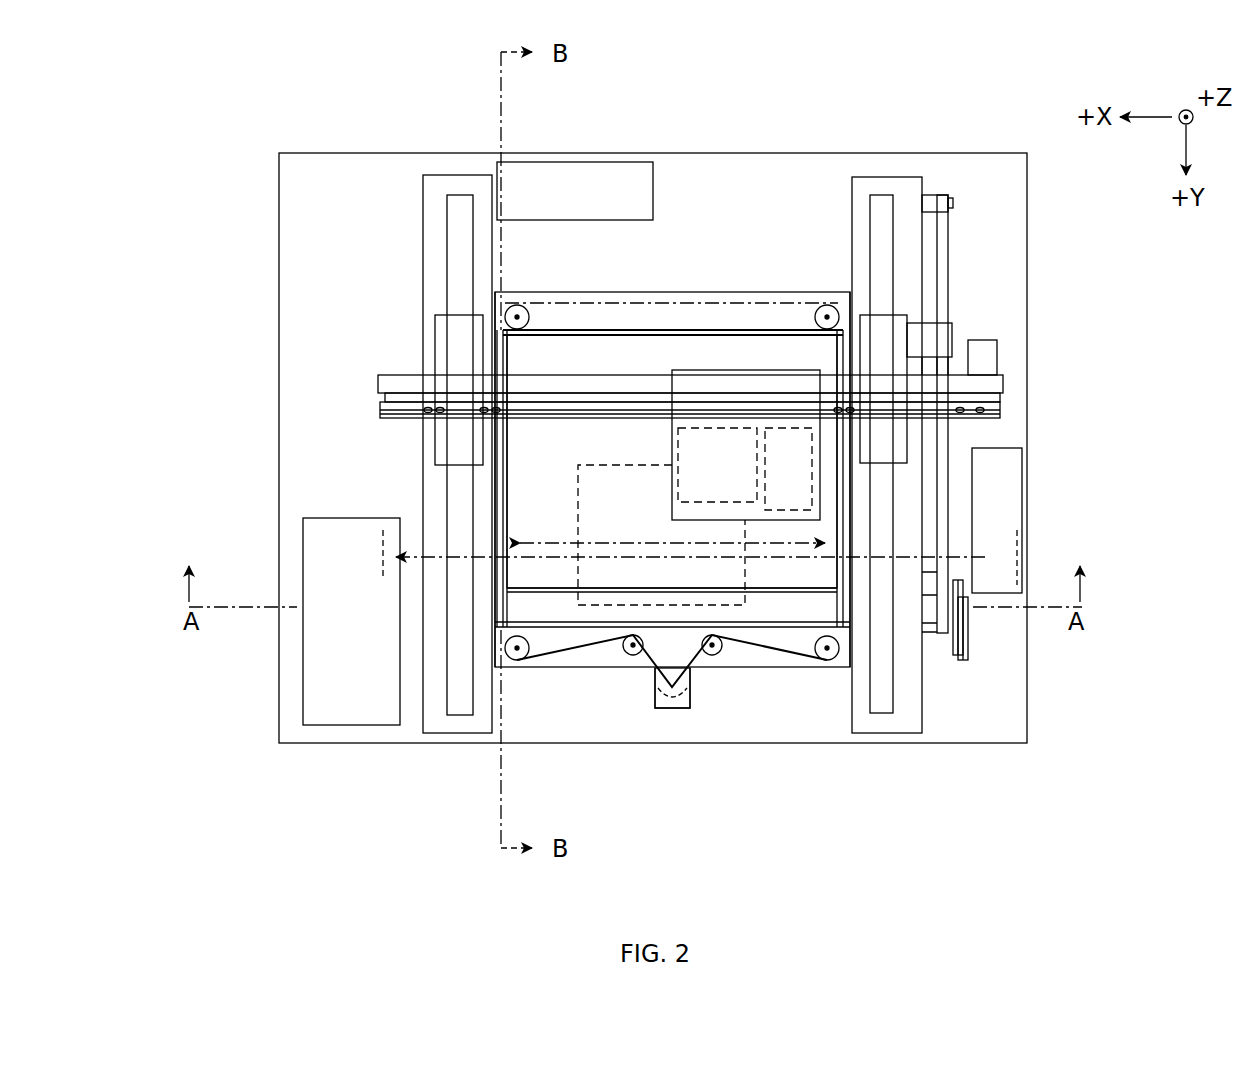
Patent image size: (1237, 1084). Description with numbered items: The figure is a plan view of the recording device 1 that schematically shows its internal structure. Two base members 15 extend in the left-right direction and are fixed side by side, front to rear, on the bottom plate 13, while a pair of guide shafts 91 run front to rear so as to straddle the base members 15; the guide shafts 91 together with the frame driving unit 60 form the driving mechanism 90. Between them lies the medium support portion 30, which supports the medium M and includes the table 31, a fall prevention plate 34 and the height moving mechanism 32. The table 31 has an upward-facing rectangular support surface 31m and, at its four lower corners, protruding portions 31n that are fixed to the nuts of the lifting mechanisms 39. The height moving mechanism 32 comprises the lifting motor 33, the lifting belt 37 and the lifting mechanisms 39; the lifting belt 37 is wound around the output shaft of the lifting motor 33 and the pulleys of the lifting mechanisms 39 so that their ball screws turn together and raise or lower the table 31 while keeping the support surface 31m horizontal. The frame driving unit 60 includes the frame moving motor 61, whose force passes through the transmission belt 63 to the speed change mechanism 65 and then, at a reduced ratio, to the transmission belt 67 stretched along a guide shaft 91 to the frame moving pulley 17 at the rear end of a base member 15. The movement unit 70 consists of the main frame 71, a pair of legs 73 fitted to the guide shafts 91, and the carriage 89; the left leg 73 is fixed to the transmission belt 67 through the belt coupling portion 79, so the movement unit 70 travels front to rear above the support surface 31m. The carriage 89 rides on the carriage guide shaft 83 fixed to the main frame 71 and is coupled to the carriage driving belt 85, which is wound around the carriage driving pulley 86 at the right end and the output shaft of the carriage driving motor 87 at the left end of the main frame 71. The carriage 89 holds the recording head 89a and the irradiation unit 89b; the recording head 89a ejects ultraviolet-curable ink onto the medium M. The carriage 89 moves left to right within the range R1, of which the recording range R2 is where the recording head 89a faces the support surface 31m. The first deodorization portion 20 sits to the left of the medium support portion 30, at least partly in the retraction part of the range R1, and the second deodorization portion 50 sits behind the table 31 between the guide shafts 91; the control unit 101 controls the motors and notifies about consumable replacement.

The recording device 1 is at (443, 138).
The bottom plate 13 is at (303, 172).
The base members 15 is at (666, 292).
The frame moving pulley 17 is at (955, 203).
The first deodorization portion 20 is at (1010, 558).
The medium support portion 30 is at (673, 718).
The table 31 is at (617, 322).
The support surface 31m is at (572, 360).
The protruding portions 31n is at (505, 300).
The height moving mechanism 32 is at (690, 702).
The lifting motor 33 is at (662, 708).
The fall prevention plate 34 is at (503, 455).
The lifting belt 37 is at (803, 658).
The lifting mechanisms 39 is at (522, 305).
The second deodorization portion 50 is at (613, 160).
The frame driving unit 60 is at (996, 538).
The frame moving motor 61 is at (962, 572).
The transmission belt 63 is at (970, 588).
The speed change mechanism 65 is at (968, 628).
The transmission belt 67 is at (945, 502).
The movement unit 70 is at (1008, 384).
The main frame 71 is at (432, 382).
The legs 73 is at (450, 335).
The belt coupling portion 79 is at (940, 340).
The carriage guide shaft 83 is at (1002, 412).
The carriage driving belt 85 is at (420, 395).
The carriage driving pulley 86 is at (400, 410).
The carriage driving motor 87 is at (982, 358).
The carriage 89 is at (826, 461).
The recording head 89a is at (720, 428).
The irradiation unit 89b is at (777, 428).
The driving mechanism 90 is at (970, 263).
The guide shafts 91 is at (462, 710).
The control unit 101 is at (338, 727).
The medium M is at (578, 505).
The range R1 is at (540, 543).
The recording range R2 is at (520, 557).